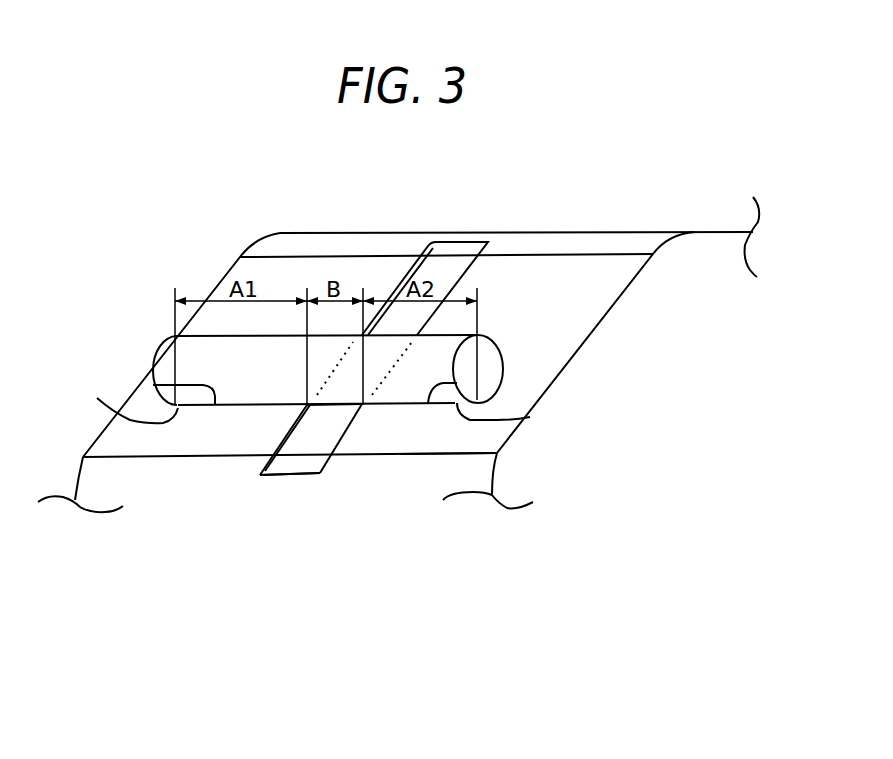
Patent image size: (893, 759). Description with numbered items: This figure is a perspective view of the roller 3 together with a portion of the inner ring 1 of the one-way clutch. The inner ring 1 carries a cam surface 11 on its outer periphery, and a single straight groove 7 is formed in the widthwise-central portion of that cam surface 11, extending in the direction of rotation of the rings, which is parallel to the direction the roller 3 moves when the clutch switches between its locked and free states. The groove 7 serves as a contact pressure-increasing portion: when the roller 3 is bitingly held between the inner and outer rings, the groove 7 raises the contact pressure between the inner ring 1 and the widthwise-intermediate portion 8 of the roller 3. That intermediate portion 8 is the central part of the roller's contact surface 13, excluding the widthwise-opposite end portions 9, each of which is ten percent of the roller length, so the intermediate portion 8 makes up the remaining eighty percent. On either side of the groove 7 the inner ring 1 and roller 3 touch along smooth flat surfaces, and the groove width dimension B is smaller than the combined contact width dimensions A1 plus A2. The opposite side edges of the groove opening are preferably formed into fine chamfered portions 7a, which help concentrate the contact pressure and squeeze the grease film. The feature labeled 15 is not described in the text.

The inner ring 1 is at (236, 247).
The roller 3 is at (163, 330).
The groove 7 is at (280, 424).
The chamfered portions 7a is at (326, 414).
The widthwise-intermediate portion 8 is at (307, 475).
The widthwise-opposite end portions 9 is at (97, 398).
The cam surface 11 is at (487, 440).
The contact surface 13 is at (383, 408).
The fixing bracket 15 is at (153, 383).